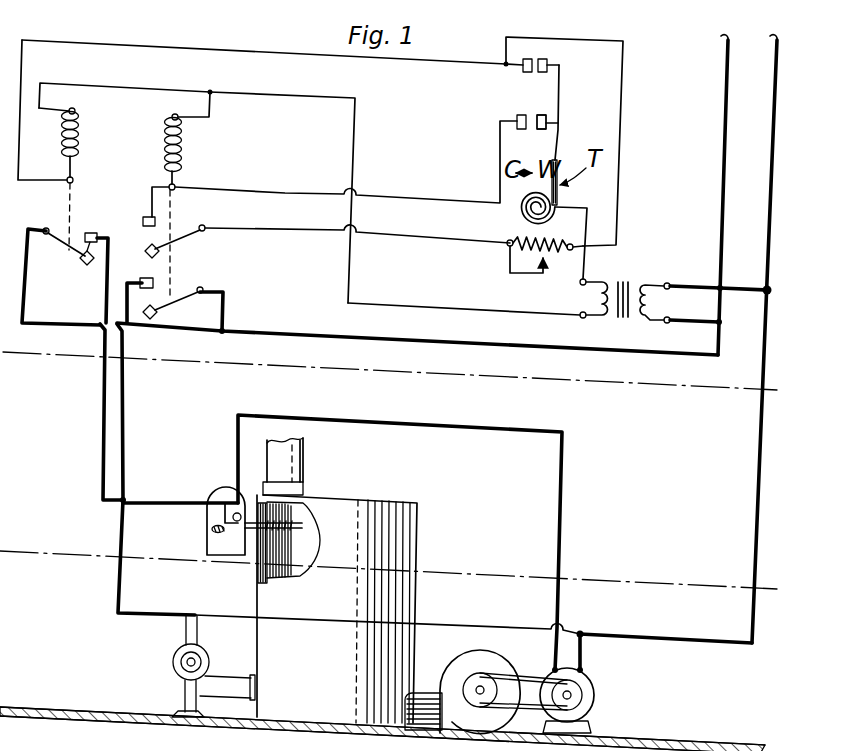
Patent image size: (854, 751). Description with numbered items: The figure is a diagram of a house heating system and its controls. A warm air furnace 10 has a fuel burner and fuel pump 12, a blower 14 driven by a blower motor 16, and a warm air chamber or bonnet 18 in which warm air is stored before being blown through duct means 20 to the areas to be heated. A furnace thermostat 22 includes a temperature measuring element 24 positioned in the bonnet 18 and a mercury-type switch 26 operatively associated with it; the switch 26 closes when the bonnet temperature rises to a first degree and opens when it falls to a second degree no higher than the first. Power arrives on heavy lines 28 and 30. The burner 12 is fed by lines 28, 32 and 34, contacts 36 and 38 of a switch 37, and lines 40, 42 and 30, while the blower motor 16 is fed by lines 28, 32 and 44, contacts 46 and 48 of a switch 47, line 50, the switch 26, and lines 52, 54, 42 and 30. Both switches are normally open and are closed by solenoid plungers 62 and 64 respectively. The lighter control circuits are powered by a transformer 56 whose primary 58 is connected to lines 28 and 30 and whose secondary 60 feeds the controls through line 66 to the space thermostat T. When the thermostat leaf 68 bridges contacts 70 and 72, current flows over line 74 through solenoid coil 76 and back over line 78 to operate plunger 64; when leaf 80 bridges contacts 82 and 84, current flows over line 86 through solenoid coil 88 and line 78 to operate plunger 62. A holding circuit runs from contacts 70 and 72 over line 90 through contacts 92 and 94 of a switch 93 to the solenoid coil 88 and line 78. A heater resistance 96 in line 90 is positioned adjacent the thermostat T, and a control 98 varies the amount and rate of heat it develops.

The warm air furnace 10 is at (255, 592).
The fuel burner and fuel pump 12 is at (172, 673).
The blower 14 is at (492, 667).
The blower motor 16 is at (597, 695).
The warm air chamber or bonnet 18 is at (360, 557).
The duct means 20 is at (306, 457).
The furnace thermostat 22 is at (205, 527).
The temperature measuring element 24 is at (277, 567).
The switch 26 is at (222, 527).
The line 28 is at (720, 173).
The line 30 is at (770, 190).
The line 32 is at (442, 325).
The line 34 is at (226, 306).
The contact 36 is at (162, 314).
The switch 37 is at (158, 311).
The contact 38 is at (156, 296).
The line 40 is at (125, 412).
The line 42 is at (693, 640).
The line 44 is at (26, 300).
The contact 46 is at (90, 276).
The switch 47 is at (62, 246).
The contact 48 is at (90, 233).
The line 50 is at (104, 413).
The line 52 is at (380, 423).
The line 54 is at (583, 650).
The transformer 56 is at (627, 279).
The primary 58 is at (645, 300).
The secondary 60 is at (600, 298).
The solenoid plunger 62 is at (178, 213).
The solenoid plunger 64 is at (68, 195).
The line 66 is at (588, 228).
The leaf 68 is at (560, 88).
The contact 70 is at (548, 65).
The contact 72 is at (524, 72).
The line 74 is at (266, 70).
The solenoid coil 76 is at (80, 142).
The line 78 is at (356, 128).
The leaf 80 is at (548, 125).
The contact 82 is at (540, 115).
The contact 84 is at (522, 141).
The line 86 is at (422, 168).
The solenoid coil 88 is at (184, 147).
The line 90 is at (312, 230).
The contact 92 is at (161, 254).
The switch 93 is at (152, 245).
The contact 94 is at (143, 222).
The resistance 96 is at (524, 241).
The control 98 is at (531, 283).